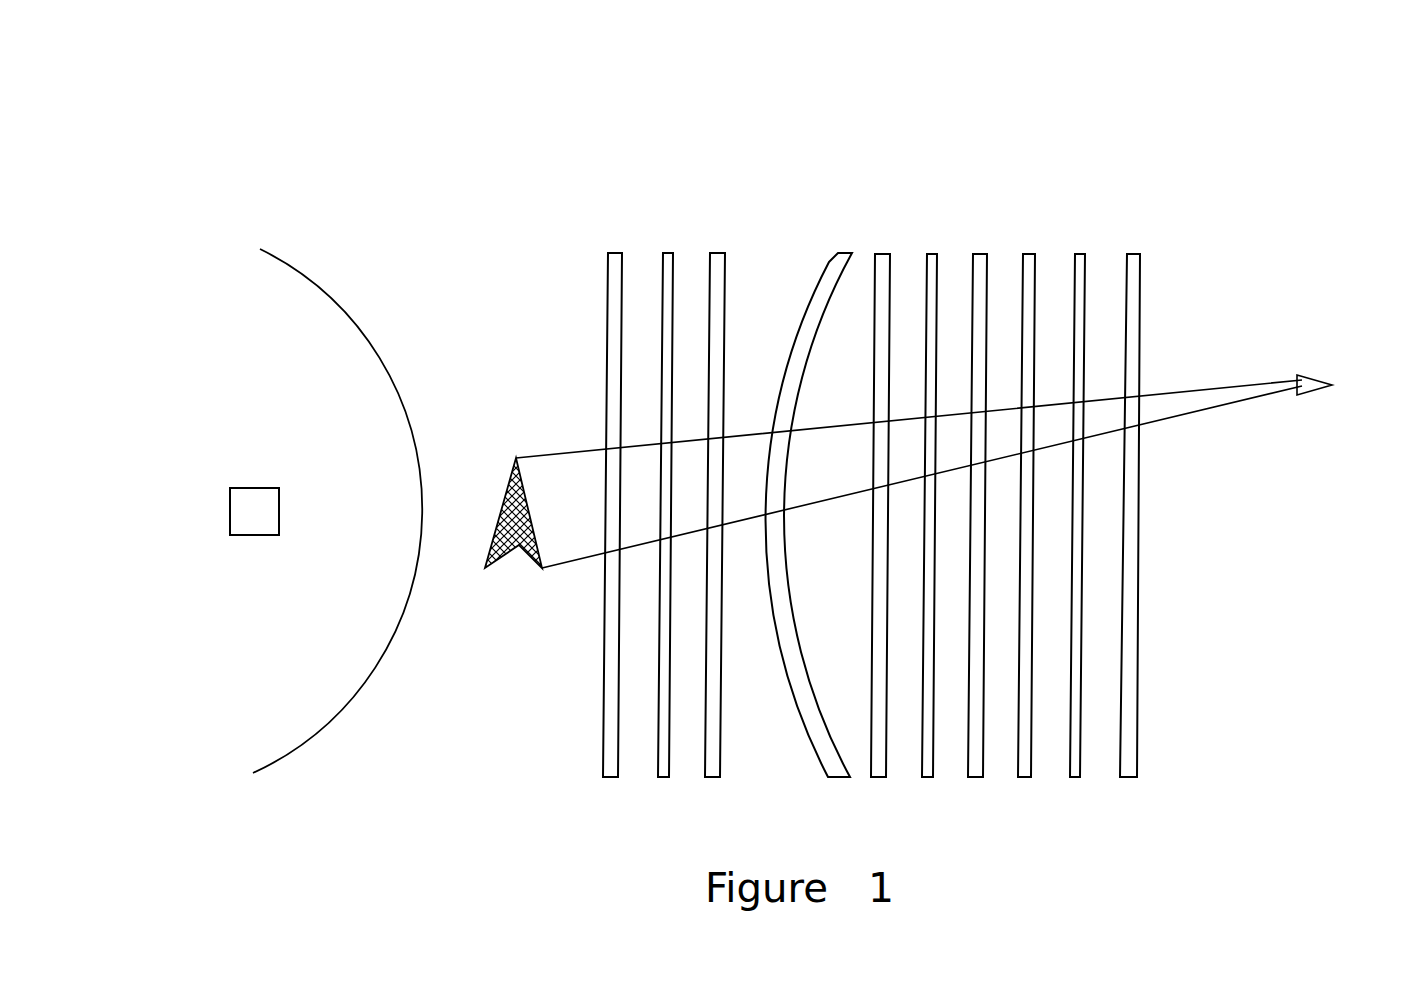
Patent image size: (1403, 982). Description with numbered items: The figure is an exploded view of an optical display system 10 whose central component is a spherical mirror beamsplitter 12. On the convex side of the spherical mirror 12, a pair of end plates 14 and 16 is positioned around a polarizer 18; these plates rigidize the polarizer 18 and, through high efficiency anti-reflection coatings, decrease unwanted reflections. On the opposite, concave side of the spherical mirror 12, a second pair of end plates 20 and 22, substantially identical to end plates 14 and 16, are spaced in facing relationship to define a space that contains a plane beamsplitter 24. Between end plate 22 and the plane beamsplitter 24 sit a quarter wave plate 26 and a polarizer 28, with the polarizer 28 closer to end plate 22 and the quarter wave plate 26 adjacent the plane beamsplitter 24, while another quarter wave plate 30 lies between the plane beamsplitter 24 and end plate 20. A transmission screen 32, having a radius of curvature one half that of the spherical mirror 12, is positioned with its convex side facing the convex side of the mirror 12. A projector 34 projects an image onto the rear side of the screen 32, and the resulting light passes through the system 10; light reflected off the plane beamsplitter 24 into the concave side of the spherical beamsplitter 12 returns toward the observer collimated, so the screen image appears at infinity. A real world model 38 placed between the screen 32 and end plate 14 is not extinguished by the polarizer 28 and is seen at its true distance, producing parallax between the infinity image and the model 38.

The optical display system 10 is at (1214, 124).
The spherical mirror beamsplitter 12 is at (823, 267).
The end plate 14 is at (608, 265).
The end plate 16 is at (710, 263).
The polarizer 18 is at (663, 263).
The end plate 20 is at (875, 254).
The end plate 22 is at (1140, 269).
The plane beamsplitter 24 is at (975, 254).
The quarter wave plate 26 is at (1027, 254).
The polarizer 28 is at (1085, 260).
The quarter wave plate 30 is at (928, 254).
The transmission screen 32 is at (279, 259).
The projector 34 is at (250, 488).
The model 38 is at (509, 477).